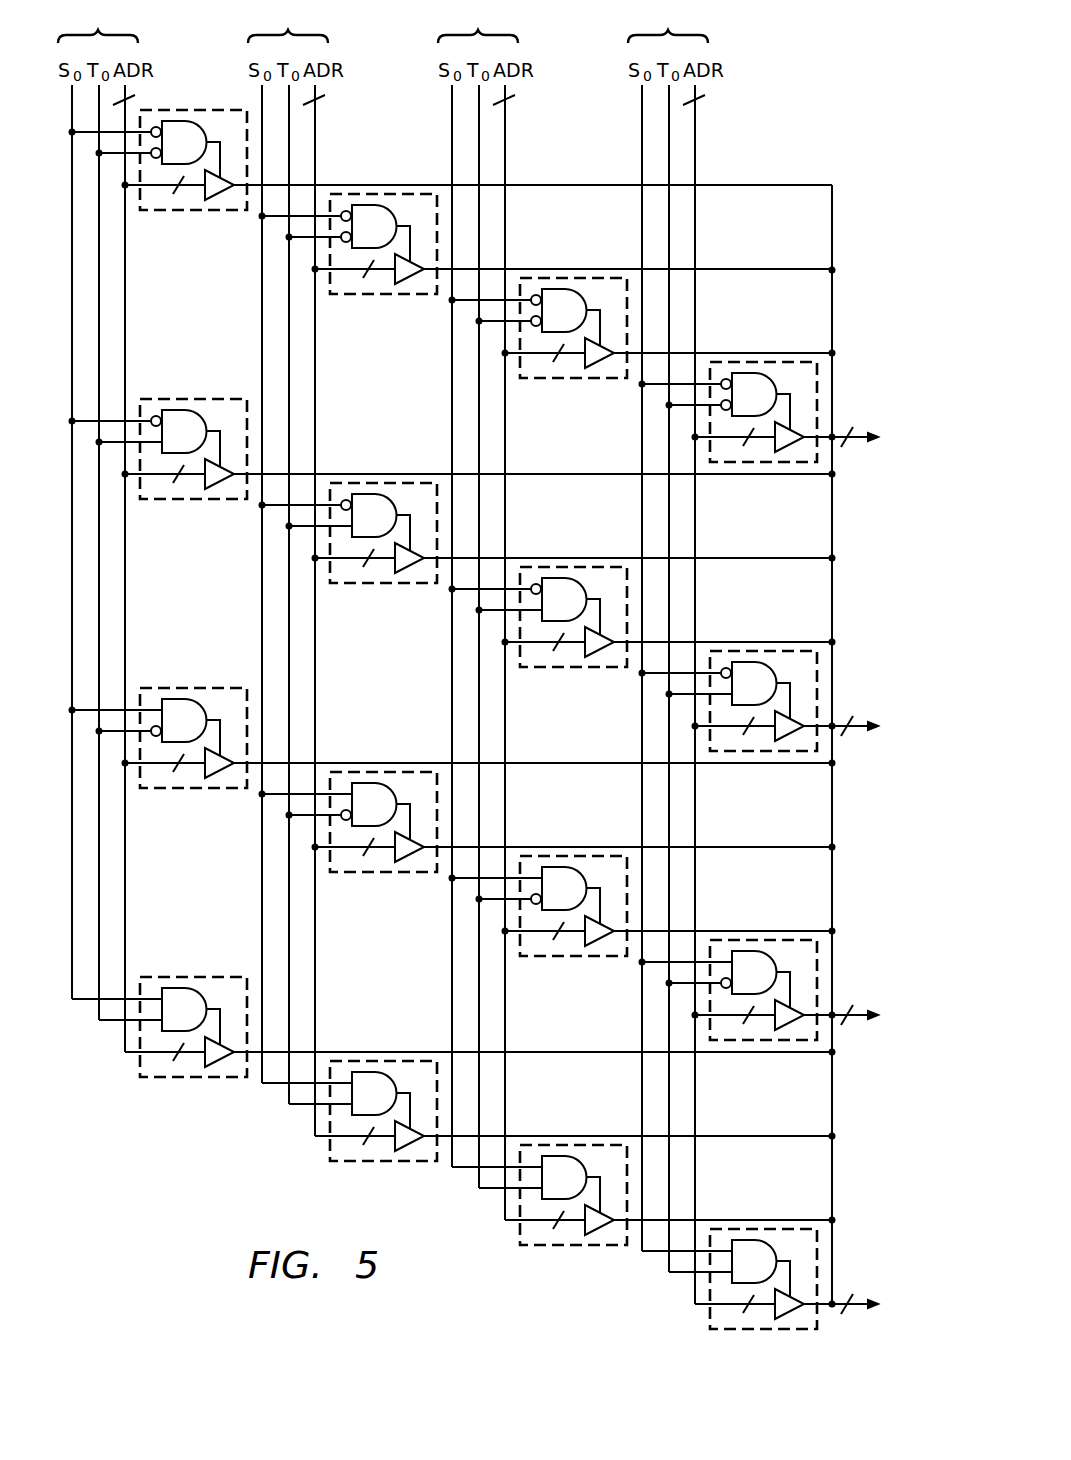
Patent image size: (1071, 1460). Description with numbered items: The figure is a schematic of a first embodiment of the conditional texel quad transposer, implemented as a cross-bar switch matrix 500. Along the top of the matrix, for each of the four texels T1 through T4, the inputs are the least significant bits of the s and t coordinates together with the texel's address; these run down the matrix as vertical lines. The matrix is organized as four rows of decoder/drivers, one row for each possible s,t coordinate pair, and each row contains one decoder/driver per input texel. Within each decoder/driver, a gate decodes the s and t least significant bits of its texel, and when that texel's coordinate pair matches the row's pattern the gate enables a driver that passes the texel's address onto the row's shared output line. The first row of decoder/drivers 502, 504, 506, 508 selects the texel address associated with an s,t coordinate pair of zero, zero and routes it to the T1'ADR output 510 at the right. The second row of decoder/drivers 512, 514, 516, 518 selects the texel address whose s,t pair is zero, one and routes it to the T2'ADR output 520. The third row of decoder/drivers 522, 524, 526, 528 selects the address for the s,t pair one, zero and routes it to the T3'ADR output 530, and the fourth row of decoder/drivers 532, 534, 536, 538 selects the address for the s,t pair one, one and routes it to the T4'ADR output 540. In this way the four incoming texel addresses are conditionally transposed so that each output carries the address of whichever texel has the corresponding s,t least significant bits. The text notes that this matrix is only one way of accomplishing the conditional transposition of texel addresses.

The cross-bar switch matrix 500 is at (845, 126).
The decoder/driver 502 is at (187, 212).
The decoder/driver 504 is at (377, 296).
The decoder/driver 506 is at (567, 380).
The decoder/driver 508 is at (757, 464).
The T1'ADR output 510 is at (853, 440).
The decoder/driver 512 is at (187, 501).
The decoder/driver 514 is at (377, 585).
The decoder/driver 516 is at (567, 669).
The decoder/driver 518 is at (757, 753).
The T2'ADR output 520 is at (853, 729).
The decoder/driver 522 is at (187, 790).
The decoder/driver 524 is at (377, 874).
The decoder/driver 526 is at (567, 958).
The decoder/driver 528 is at (757, 1042).
The T3'ADR output 530 is at (853, 1018).
The decoder/driver 532 is at (187, 1079).
The decoder/driver 534 is at (377, 1163).
The decoder/driver 536 is at (567, 1247).
The decoder/driver 538 is at (707, 1312).
The T4'ADR output 540 is at (850, 1297).